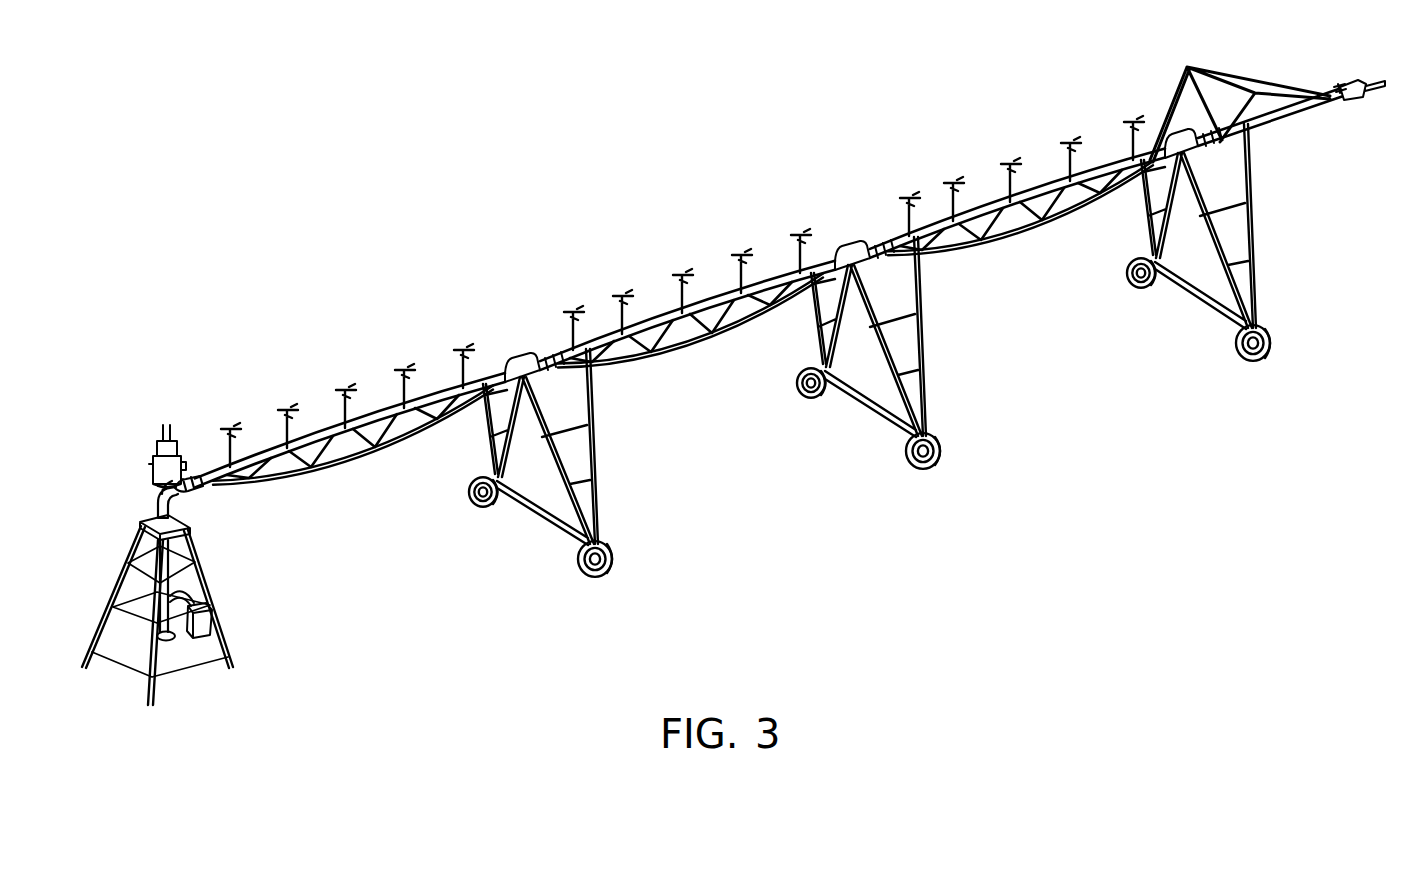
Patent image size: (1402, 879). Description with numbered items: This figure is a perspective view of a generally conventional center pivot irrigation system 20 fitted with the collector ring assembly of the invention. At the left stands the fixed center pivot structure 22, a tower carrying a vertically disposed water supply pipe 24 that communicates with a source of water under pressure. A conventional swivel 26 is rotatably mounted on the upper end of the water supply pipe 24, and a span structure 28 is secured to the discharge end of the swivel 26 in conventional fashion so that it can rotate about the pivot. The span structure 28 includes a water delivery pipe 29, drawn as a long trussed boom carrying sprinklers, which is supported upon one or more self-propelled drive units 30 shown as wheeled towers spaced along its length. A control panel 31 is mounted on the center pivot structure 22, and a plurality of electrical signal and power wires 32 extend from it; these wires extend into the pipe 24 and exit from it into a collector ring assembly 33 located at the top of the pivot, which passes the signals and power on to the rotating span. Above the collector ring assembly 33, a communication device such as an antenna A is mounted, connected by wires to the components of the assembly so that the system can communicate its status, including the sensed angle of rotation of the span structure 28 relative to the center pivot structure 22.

The center pivot irrigation system 20 is at (860, 202).
The center pivot structure 22 is at (218, 563).
The water supply pipe 24 is at (192, 584).
The swivel 26 is at (192, 508).
The span structure 28 is at (434, 372).
The water delivery pipe 29 is at (717, 308).
The self-propelled drive units 30 is at (608, 492).
The control panel 31 is at (204, 620).
The electrical signal and power wires 32 is at (204, 597).
The collector ring assembly 33 is at (142, 494).
The antenna A is at (160, 433).